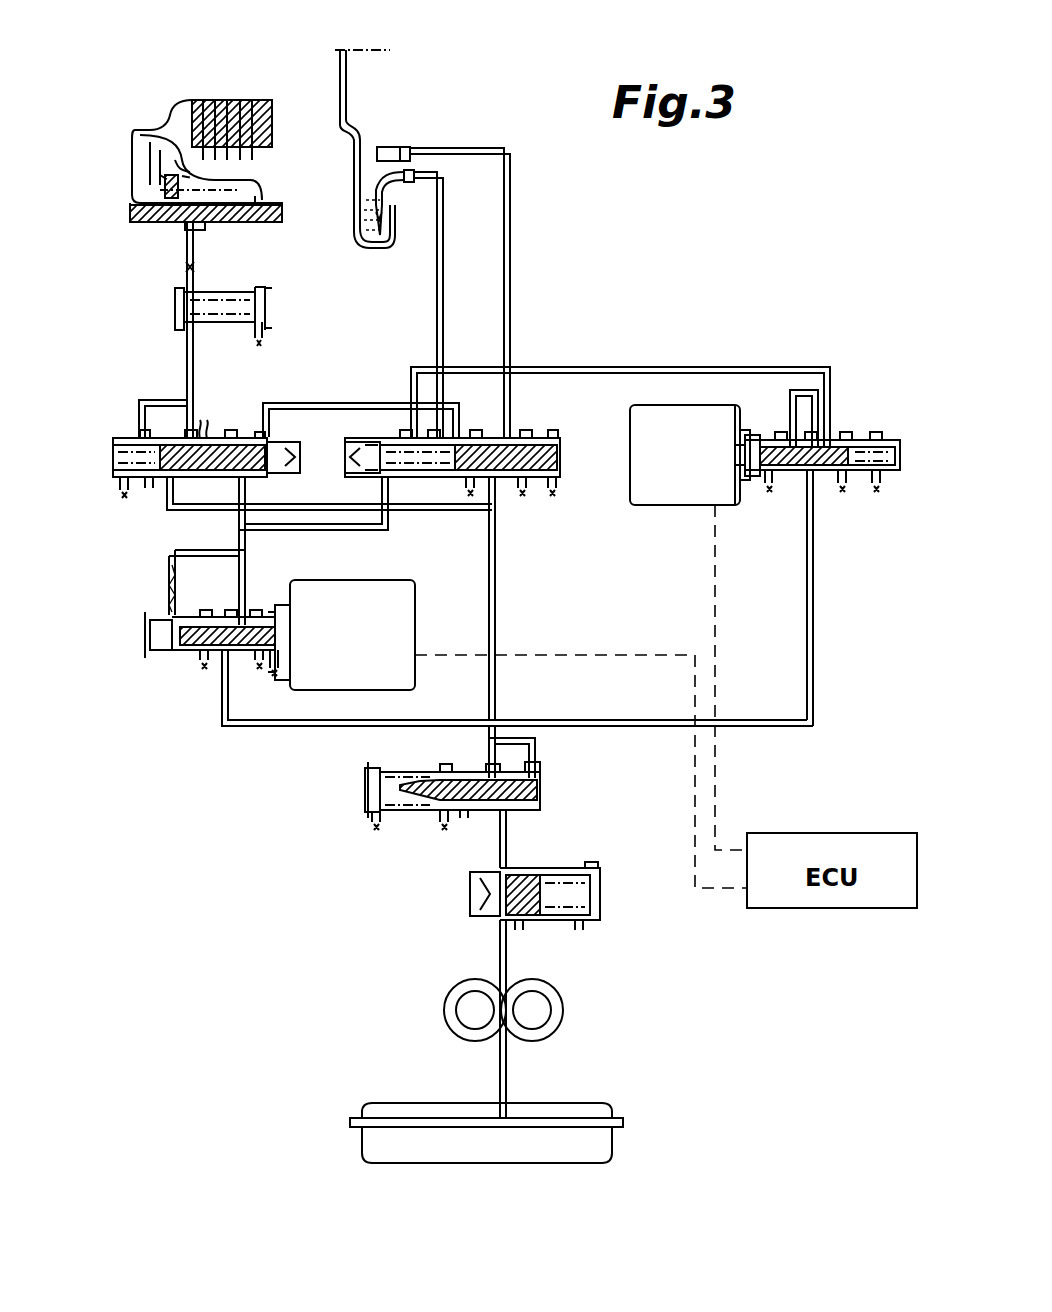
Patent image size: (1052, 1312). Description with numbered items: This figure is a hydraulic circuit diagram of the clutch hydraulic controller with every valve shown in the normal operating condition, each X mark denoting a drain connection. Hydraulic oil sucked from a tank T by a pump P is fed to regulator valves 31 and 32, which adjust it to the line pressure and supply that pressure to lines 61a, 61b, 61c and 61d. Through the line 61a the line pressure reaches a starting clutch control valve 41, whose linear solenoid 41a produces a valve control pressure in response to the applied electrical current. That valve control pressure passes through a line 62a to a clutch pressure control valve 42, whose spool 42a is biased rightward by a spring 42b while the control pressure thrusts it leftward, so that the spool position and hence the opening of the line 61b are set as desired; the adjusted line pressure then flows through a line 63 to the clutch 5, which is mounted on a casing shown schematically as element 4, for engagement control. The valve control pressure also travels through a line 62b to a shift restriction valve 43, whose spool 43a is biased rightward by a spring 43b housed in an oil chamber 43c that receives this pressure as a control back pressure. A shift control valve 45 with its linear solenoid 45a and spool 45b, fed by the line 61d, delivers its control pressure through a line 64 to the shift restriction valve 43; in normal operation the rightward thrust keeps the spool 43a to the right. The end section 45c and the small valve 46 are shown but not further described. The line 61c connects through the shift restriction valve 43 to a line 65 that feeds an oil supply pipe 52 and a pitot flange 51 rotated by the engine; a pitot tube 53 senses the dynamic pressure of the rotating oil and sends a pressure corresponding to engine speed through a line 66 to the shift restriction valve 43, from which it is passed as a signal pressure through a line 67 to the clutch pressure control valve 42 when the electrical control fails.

The clutch 5 is at (178, 98).
The transmission casing 4 is at (130, 220).
The line 63 is at (188, 258).
The valve 46 is at (270, 282).
The pitot flange 51 is at (355, 75).
The oil supply pipe 52 is at (410, 148).
The pitot tube 53 is at (395, 205).
The line 66 is at (441, 208).
The line 65 is at (510, 232).
The line 64 is at (700, 368).
The line 67 is at (295, 404).
The clutch pressure control valve 42 is at (128, 488).
The spool 42a is at (226, 440).
The spring 42b is at (125, 438).
The shift restriction valve 43 is at (522, 432).
The spool 43a is at (555, 468).
The spring 43b is at (402, 440).
The oil chamber 43c is at (385, 455).
The shift control valve 45 is at (860, 428).
The linear solenoid 45a is at (700, 497).
The spool 45b is at (848, 470).
The valve end section 45c is at (880, 487).
The line 61a is at (325, 728).
The line 61b is at (270, 505).
The line 61c is at (495, 520).
The line 61d is at (812, 600).
The line 62a is at (240, 518).
The line 62b is at (290, 535).
The starting clutch control valve 41 is at (150, 672).
The linear solenoid 41a is at (376, 682).
The regulator valve 32 is at (545, 785).
The regulator valve 31 is at (598, 868).
The pump P is at (558, 995).
The tank T is at (615, 1130).